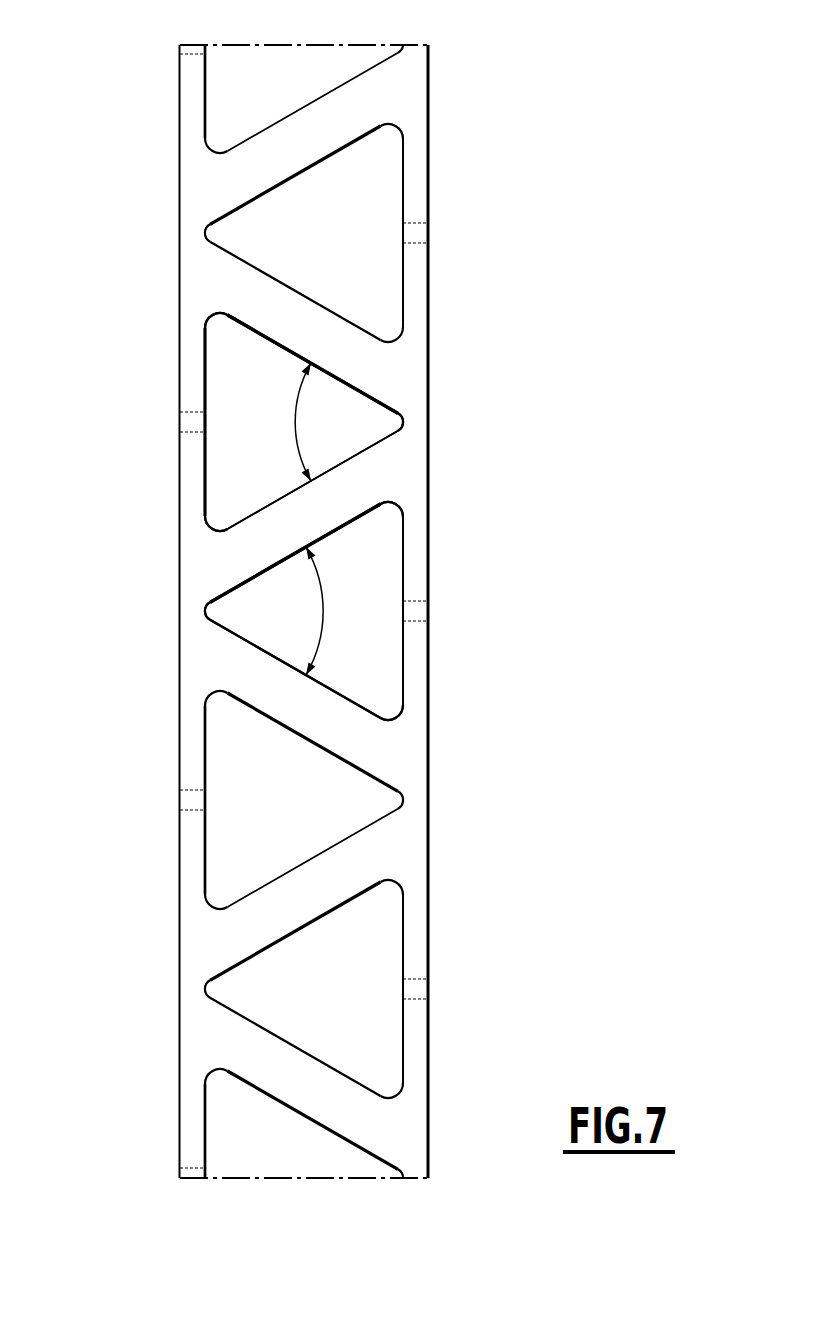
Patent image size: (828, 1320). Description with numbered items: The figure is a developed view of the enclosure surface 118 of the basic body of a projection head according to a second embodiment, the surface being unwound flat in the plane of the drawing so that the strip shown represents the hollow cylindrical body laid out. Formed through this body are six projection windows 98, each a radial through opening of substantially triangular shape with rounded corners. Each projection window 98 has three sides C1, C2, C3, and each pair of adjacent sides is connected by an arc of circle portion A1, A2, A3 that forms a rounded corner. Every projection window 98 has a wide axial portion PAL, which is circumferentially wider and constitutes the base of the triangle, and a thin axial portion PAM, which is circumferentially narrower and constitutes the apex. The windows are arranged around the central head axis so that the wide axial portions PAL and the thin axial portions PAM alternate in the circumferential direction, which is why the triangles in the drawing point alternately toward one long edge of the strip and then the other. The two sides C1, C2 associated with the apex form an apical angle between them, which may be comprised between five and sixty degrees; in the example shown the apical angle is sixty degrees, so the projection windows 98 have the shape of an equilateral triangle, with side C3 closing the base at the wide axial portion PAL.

The projection window 98 is at (365, 407).
The enclosure surface 118 is at (404, 853).
The arc of circle portion A1 is at (205, 622).
The arc of circle portion A2 is at (213, 311).
The arc of circle portion A3 is at (208, 537).
The side C1 is at (280, 563).
The side C2 is at (278, 341).
The side C3 is at (205, 488).
The wide axial portion PAL is at (224, 389).
The thin axial portion PAM is at (390, 432).